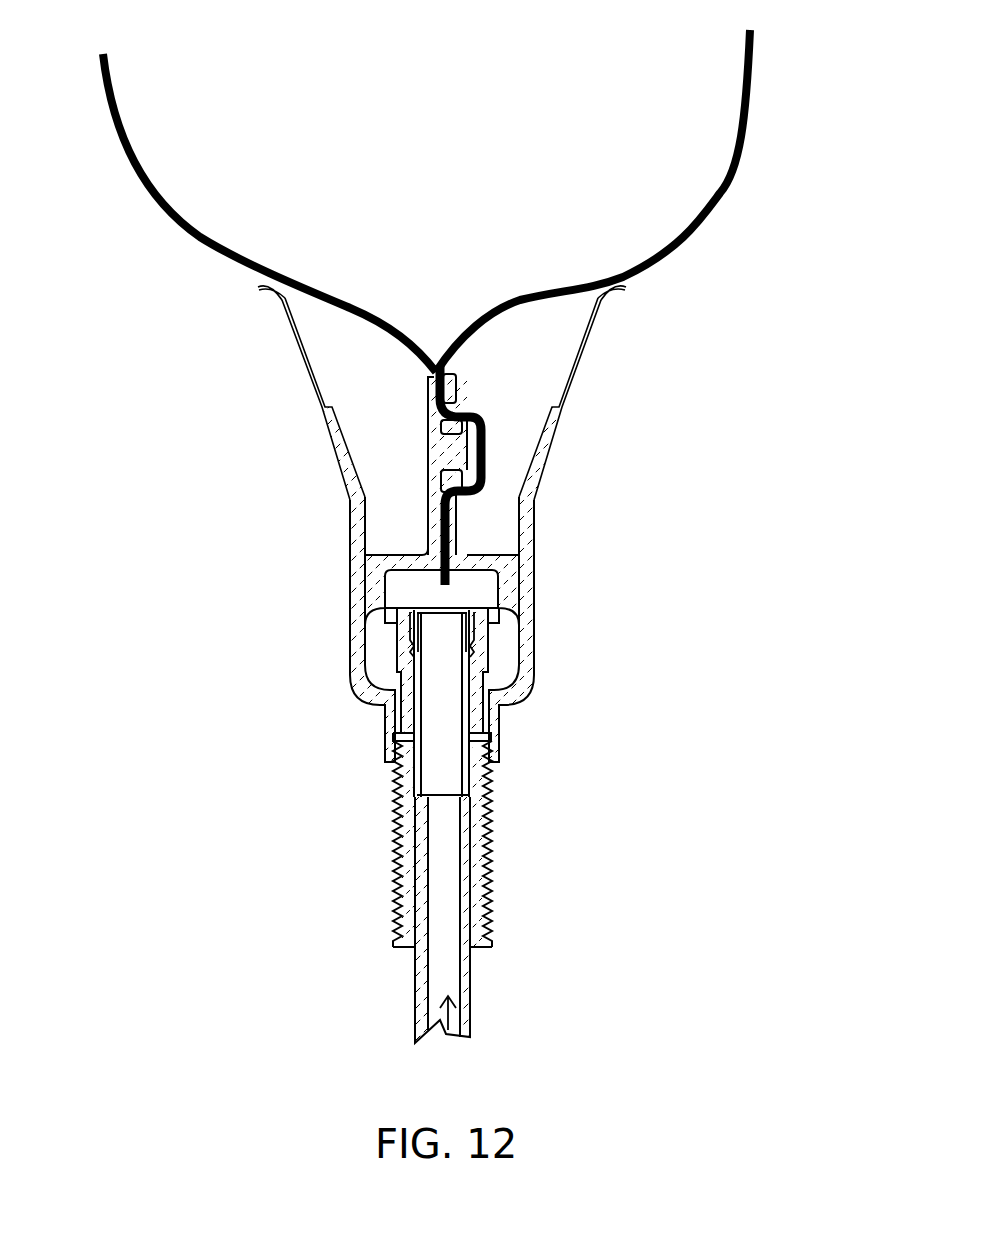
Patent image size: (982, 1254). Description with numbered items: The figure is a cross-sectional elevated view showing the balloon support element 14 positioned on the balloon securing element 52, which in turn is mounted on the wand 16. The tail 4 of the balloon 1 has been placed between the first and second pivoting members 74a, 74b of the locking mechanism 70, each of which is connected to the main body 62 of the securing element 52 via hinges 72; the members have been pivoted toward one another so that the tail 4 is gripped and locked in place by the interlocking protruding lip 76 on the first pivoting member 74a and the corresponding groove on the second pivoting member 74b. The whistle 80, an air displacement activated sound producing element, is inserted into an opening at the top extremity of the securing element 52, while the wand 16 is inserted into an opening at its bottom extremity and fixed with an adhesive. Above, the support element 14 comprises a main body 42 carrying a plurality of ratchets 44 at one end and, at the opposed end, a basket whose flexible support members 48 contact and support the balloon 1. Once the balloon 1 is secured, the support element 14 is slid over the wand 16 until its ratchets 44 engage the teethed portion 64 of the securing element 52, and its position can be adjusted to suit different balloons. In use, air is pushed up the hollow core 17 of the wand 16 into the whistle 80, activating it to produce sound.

The balloon 1 is at (717, 197).
The tail 4 is at (484, 470).
The support element 14 is at (262, 518).
The wand 16 is at (470, 970).
The hollow core 17 is at (450, 1015).
The main body 42 is at (364, 566).
The ratchets 44 is at (393, 742).
The support members 48 is at (262, 289).
The balloon securing element 52 is at (357, 796).
The main body 62 is at (488, 690).
The teethed portion 64 is at (490, 862).
The locking mechanism 70 is at (410, 454).
The hinges 72 is at (380, 618).
The first pivoting member 74a is at (428, 380).
The second pivoting member 74b is at (459, 383).
The protruding lip 76 is at (462, 447).
The whistle 80 is at (470, 632).